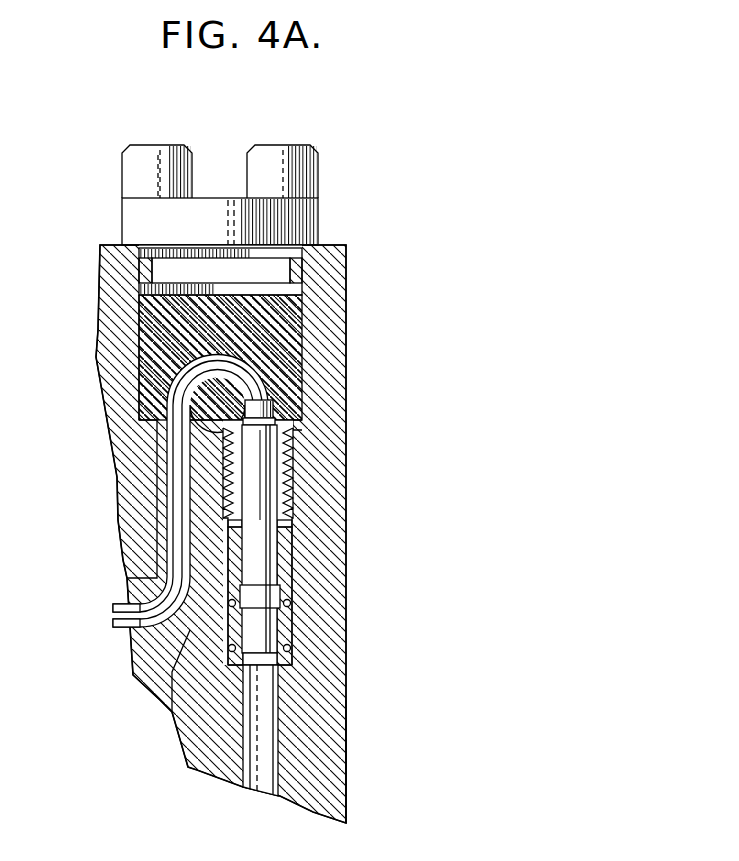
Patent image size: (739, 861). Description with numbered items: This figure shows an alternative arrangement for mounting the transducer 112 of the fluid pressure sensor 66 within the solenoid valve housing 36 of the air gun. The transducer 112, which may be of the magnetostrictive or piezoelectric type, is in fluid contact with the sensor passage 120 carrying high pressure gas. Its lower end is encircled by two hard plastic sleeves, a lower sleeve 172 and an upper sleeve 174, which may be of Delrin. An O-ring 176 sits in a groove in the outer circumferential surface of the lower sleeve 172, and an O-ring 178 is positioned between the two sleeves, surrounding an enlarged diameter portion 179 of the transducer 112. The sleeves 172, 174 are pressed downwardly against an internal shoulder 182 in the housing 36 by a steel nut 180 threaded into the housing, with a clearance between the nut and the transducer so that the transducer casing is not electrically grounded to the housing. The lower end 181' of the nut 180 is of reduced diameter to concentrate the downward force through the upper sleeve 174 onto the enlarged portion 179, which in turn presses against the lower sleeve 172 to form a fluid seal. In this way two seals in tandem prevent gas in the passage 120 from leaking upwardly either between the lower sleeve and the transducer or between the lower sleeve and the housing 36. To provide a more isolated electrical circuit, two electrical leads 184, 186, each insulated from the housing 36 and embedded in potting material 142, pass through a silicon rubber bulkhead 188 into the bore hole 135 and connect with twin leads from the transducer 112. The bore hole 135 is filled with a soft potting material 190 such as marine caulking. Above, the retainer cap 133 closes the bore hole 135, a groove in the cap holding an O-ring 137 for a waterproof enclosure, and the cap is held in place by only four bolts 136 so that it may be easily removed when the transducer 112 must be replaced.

The solenoid valve housing 36 is at (348, 787).
The fluid pressure sensor 66 is at (322, 472).
The transducer 112 is at (285, 542).
The sensor passage 120 is at (273, 742).
The retainer cap 133 is at (318, 214).
The bore hole 135 is at (300, 350).
The bolts 136 is at (310, 172).
The O-ring 137 is at (297, 265).
The potting material 142 is at (150, 685).
The lower sleeve 172 is at (293, 627).
The upper sleeve 174 is at (293, 570).
The O-ring 176 is at (293, 653).
The O-ring 178 is at (283, 603).
The enlarged diameter portion 179 is at (232, 605).
The steel nut 180 is at (293, 438).
The lower end of the nut 181' is at (315, 546).
The internal shoulder 182 is at (293, 677).
The electrical lead 184 is at (113, 607).
The electrical lead 186 is at (113, 623).
The silicon rubber bulkhead 188 is at (153, 487).
The soft potting material 190 is at (150, 353).